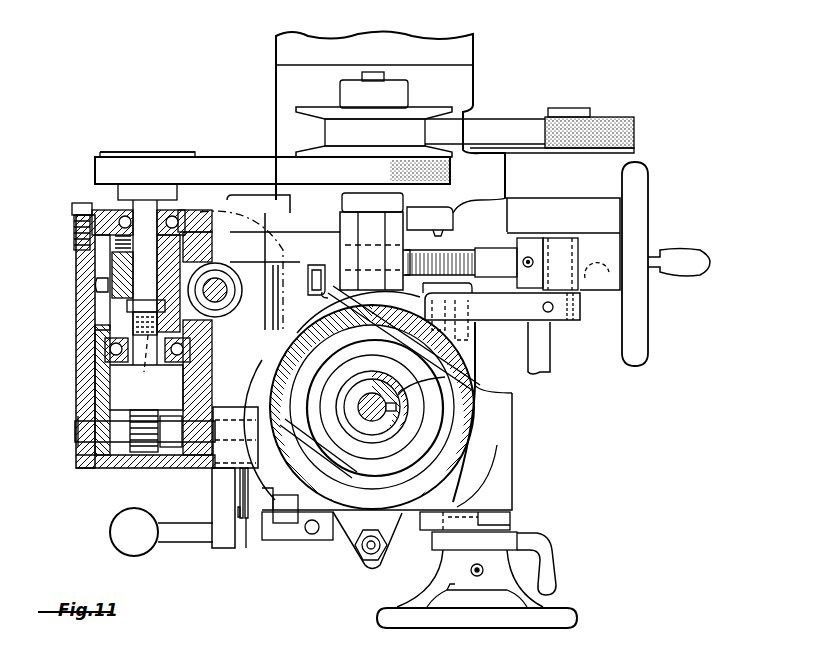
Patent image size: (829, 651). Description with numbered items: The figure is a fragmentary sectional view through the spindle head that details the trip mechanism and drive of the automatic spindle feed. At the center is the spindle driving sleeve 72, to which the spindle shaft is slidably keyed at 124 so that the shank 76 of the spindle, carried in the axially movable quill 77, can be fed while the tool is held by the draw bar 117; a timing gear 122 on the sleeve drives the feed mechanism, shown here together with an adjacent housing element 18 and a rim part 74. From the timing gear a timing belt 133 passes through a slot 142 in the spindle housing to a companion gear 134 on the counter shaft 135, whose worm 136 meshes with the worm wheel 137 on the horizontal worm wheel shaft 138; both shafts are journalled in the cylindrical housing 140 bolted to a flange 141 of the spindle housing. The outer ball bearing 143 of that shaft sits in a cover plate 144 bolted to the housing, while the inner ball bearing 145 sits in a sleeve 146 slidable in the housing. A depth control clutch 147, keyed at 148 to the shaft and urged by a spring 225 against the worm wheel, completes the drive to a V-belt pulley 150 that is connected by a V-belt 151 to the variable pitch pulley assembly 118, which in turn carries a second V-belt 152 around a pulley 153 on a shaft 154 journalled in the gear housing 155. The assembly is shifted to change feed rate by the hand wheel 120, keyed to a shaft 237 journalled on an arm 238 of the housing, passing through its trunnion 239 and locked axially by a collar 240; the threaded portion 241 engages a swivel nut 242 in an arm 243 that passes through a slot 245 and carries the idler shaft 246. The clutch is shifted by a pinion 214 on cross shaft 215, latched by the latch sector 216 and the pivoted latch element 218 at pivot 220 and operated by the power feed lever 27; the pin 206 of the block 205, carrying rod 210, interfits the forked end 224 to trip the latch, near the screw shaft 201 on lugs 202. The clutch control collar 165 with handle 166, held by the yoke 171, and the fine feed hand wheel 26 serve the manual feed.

The variable pitch V-belt drive 118 is at (352, 75).
The idler shaft 246 is at (378, 72).
The second V-belt 152 is at (485, 125).
The V-belt pulley 153 is at (605, 117).
The shaft 154 is at (560, 108).
The gear housing 155 is at (608, 178).
The hand wheel 120 is at (634, 320).
The companion gear 134 is at (242, 222).
The V-belt pulley 150 is at (140, 152).
The V-belt 151 is at (218, 160).
The cylindrical housing 140 is at (85, 392).
The cover plate 144 is at (95, 203).
The outer ball bearing 143 is at (125, 184).
The worm wheel shaft 138 is at (110, 268).
The worm wheel 137 is at (100, 290).
The spring 225 is at (165, 316).
The depth control clutch 147 is at (127, 322).
The inner ball bearing 145 is at (108, 355).
The key 148 is at (147, 365).
The sleeve 146 is at (96, 415).
The cross shaft 215 is at (88, 432).
The pinion 214 is at (142, 440).
The power feed lever 27 is at (122, 536).
The pivot 220 is at (235, 480).
The latch element 218 is at (248, 520).
The forked end 224 is at (240, 520).
The counter shaft 135 is at (222, 286).
The worm 136 is at (214, 250).
The flange 141 is at (290, 270).
The timing belt 133 is at (320, 312).
The wheel rim 74 is at (468, 432).
The key 124 is at (405, 412).
The spindle driving sleeve 72 is at (395, 385).
The quill 77 is at (445, 377).
The spindle shank 76 is at (350, 420).
The draw bar 117 is at (380, 393).
The slot 142 is at (355, 312).
The latch sector 216 is at (248, 418).
The timing gear 122 is at (460, 472).
The frame 18 is at (545, 352).
The arm 243 is at (345, 232).
The swivel nut 242 is at (406, 222).
The threaded portion 241 is at (465, 250).
The slot 245 is at (445, 212).
The shaft 237 is at (508, 260).
The collar 240 is at (545, 252).
The trunnion 239 is at (601, 277).
The arm 238 is at (512, 321).
The block 205 is at (287, 541).
The pin 206 is at (272, 503).
The rod 210 is at (313, 534).
The lug 202 is at (360, 548).
The screw shaft 201 is at (395, 566).
The yoke 171 is at (427, 520).
The clutch control collar 165 is at (517, 532).
The handle 166 is at (552, 565).
The fine feed hand wheel 26 is at (557, 618).